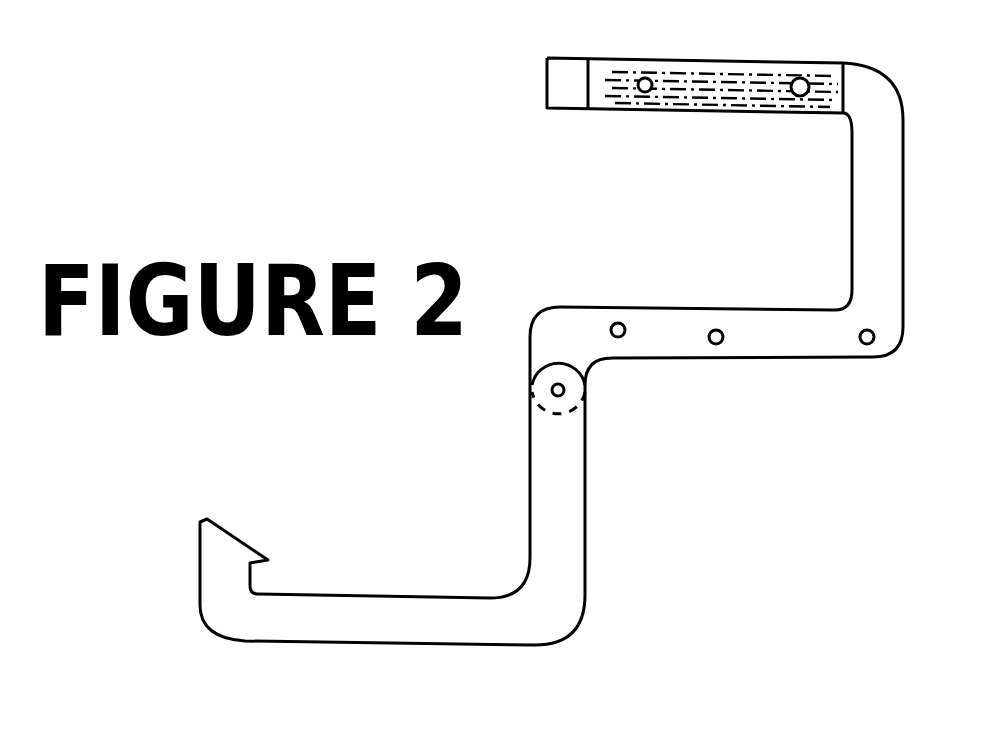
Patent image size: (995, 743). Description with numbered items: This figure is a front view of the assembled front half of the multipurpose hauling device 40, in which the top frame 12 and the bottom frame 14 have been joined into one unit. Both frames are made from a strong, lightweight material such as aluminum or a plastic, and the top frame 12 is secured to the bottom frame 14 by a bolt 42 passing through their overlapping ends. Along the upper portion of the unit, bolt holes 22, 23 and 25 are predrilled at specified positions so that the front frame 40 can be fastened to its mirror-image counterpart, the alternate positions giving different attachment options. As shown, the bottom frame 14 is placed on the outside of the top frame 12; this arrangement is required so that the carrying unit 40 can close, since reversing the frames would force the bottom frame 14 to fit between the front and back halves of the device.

The front frame 40 is at (592, 189).
The top frame 12 is at (859, 207).
The bottom frame 14 is at (573, 508).
The bolt hole 25 is at (623, 327).
The bolt hole 22 is at (718, 343).
The bolt hole 23 is at (870, 343).
The bolt 42 is at (565, 390).